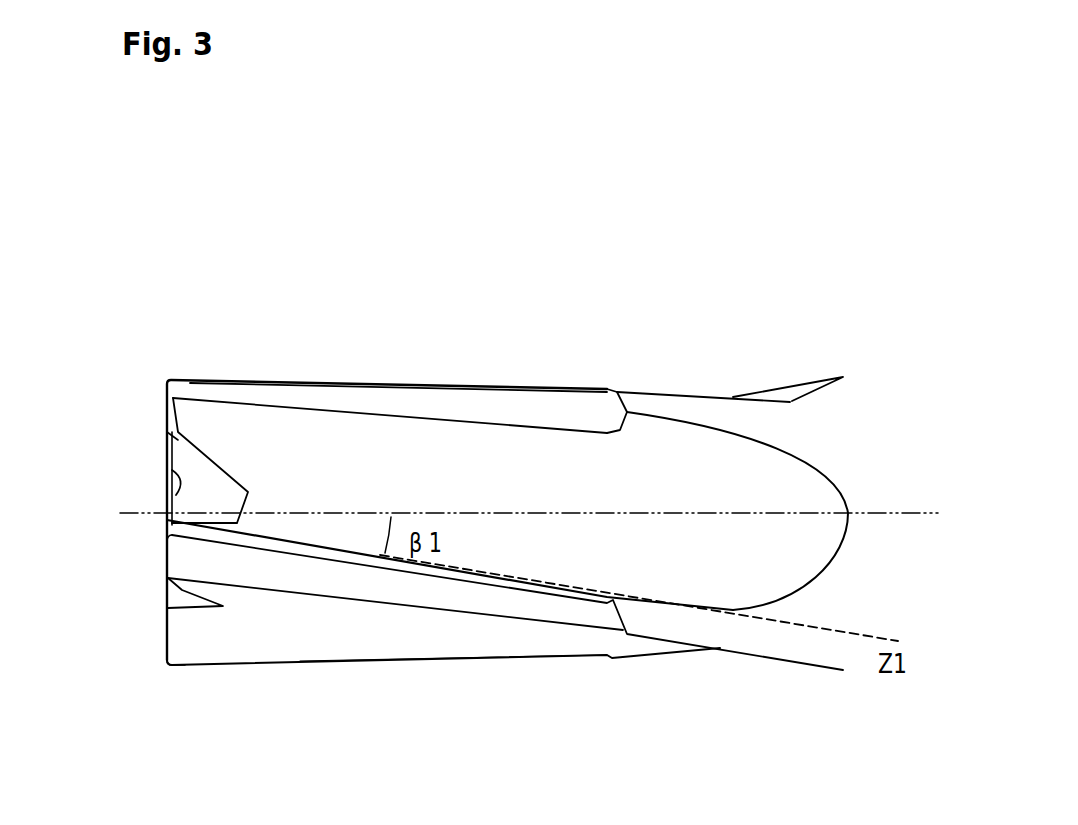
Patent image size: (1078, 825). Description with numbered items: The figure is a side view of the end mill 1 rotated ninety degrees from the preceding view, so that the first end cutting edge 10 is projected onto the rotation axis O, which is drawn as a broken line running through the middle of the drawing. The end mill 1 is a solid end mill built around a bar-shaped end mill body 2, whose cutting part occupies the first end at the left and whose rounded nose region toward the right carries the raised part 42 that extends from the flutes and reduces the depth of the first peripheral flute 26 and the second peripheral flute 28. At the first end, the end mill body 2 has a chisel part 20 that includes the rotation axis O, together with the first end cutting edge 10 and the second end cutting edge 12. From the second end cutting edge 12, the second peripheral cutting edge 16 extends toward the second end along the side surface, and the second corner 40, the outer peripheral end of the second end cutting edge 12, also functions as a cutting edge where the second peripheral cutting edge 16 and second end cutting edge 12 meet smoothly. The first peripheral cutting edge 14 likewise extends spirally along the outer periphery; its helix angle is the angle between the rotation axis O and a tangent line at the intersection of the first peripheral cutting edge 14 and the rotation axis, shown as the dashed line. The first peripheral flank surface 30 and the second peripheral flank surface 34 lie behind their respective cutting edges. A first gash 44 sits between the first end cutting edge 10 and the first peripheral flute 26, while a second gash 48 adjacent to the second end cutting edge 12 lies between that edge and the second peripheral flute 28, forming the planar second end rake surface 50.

The end mill 1 is at (825, 307).
The end mill body 2 is at (785, 474).
The first end cutting edge 10 is at (168, 517).
The second end cutting edge 12 is at (167, 424).
The first peripheral cutting edge 14 is at (502, 573).
The second peripheral cutting edge 16 is at (195, 382).
The chisel part 20 is at (170, 530).
The first peripheral flute 26 is at (282, 488).
The second peripheral flute 28 is at (468, 648).
The first peripheral flank surface 30 is at (253, 543).
The second peripheral flank surface 34 is at (580, 413).
The second corner 40 is at (170, 663).
The raised part 42 is at (817, 538).
The first gash 44 is at (168, 492).
The second gash 48 is at (331, 601).
The second end rake surface 50 is at (170, 602).